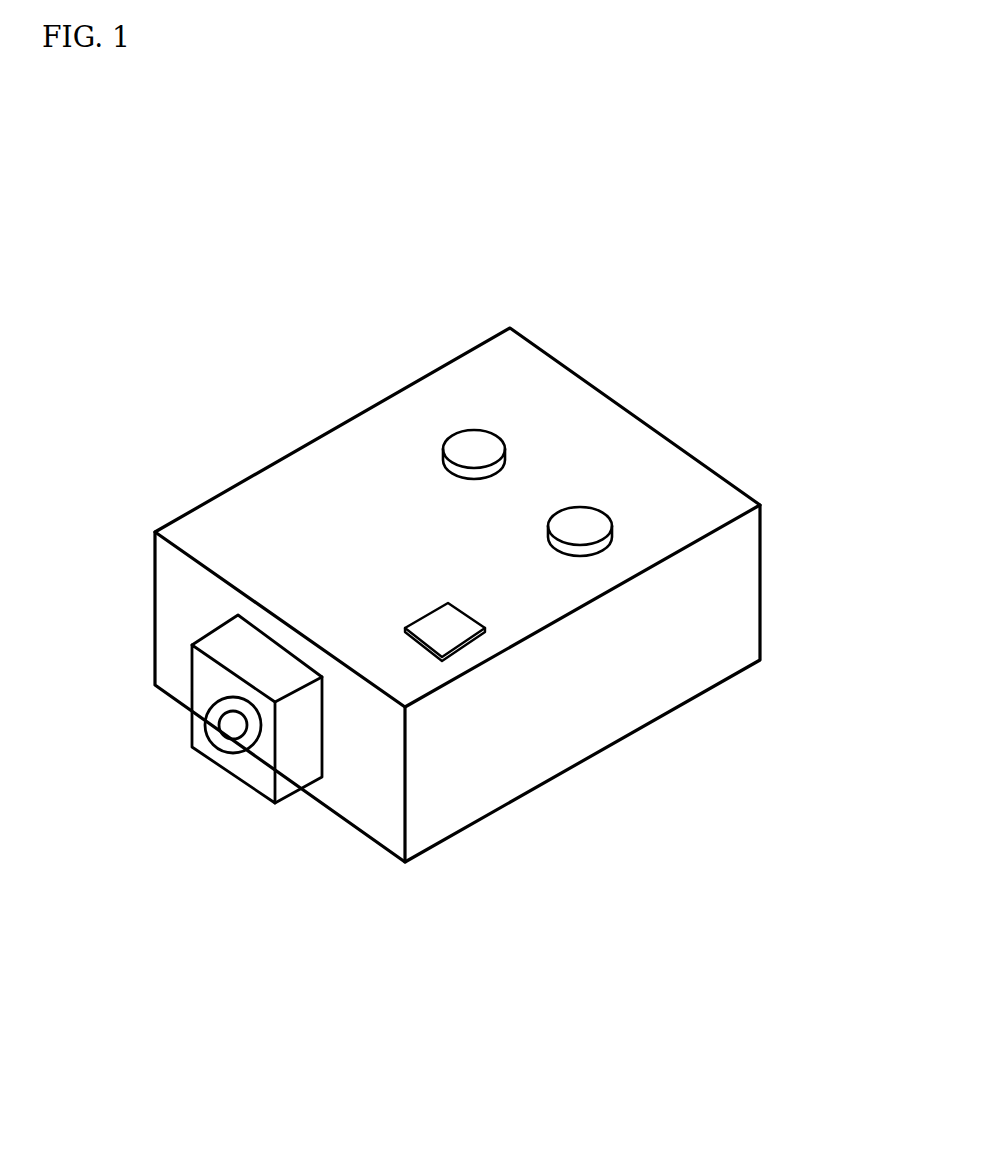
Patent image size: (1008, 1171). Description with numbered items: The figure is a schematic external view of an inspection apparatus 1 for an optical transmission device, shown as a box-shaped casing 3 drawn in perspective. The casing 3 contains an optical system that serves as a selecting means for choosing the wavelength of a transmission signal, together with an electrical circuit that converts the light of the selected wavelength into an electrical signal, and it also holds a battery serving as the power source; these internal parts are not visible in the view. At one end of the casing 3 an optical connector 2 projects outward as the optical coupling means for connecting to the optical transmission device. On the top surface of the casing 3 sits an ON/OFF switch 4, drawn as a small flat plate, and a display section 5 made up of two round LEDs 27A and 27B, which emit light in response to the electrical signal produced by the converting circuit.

The inspection apparatus 1 is at (347, 387).
The optical connector 2 is at (290, 762).
The casing 3 is at (760, 587).
The ON/OFF switch 4 is at (445, 630).
The display section 5 is at (649, 358).
The LED 27A is at (490, 443).
The LED 27B is at (585, 527).